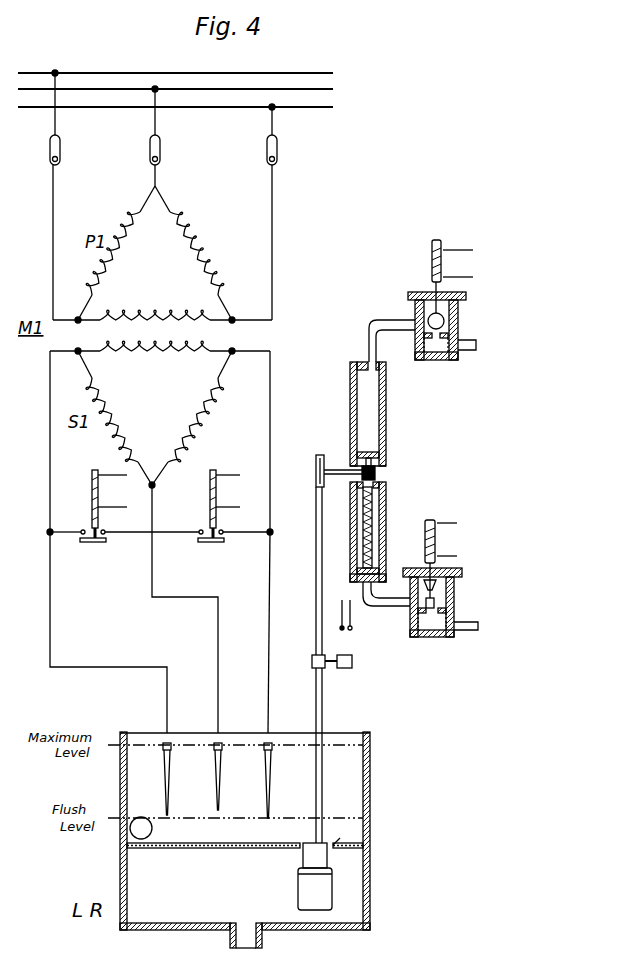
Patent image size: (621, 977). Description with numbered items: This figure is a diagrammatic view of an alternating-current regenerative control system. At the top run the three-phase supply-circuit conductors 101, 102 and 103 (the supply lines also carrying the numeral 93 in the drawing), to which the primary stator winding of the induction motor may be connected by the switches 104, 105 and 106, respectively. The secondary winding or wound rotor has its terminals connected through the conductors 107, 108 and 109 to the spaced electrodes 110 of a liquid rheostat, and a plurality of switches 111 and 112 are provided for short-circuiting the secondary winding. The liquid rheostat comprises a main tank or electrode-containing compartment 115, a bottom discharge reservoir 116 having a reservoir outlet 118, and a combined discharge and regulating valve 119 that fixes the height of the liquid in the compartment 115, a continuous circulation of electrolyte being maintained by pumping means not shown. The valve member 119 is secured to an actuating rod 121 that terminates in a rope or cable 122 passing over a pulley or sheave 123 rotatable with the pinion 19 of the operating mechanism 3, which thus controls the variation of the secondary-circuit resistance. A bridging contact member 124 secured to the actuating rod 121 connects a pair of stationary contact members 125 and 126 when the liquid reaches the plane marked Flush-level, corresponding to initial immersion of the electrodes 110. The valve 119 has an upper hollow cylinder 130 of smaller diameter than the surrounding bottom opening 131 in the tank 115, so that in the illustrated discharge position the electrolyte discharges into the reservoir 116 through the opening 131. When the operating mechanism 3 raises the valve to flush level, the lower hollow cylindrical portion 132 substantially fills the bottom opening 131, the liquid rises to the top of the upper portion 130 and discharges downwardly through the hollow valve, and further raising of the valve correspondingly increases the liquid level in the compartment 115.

The operating mechanism 3 is at (389, 396).
The pinion 19 is at (376, 475).
The three-phase supply lines 93 is at (30, 108).
The supply-circuit conductor 101 is at (112, 72).
The supply-circuit conductor 102 is at (213, 66).
The supply-circuit conductor 103 is at (218, 107).
The switch 104 is at (60, 150).
The switch 105 is at (160, 150).
The switch 106 is at (277, 150).
The conductor 107 is at (49, 571).
The conductor 108 is at (151, 571).
The conductor 109 is at (267, 571).
The spaced electrodes 110 is at (212, 784).
The switch 111 is at (88, 530).
The switch 112 is at (206, 530).
The main tank or electrode-containing compartment 115 is at (120, 775).
The bottom discharge reservoir 116 is at (220, 866).
The reservoir outlet 118 is at (232, 940).
The combined discharge and regulating valve 119 is at (292, 889).
The actuating rod 121 is at (323, 784).
The rope or cable 122 is at (314, 584).
The pulley or sheave 123 is at (322, 449).
The bridging contact member 124 is at (352, 662).
The stationary contact member 125 is at (338, 632).
The stationary contact member 126 is at (353, 628).
The upper hollow cylinder 130 is at (304, 843).
The bottom opening 131 is at (350, 834).
The lower hollow cylindrical portion 132 is at (332, 887).